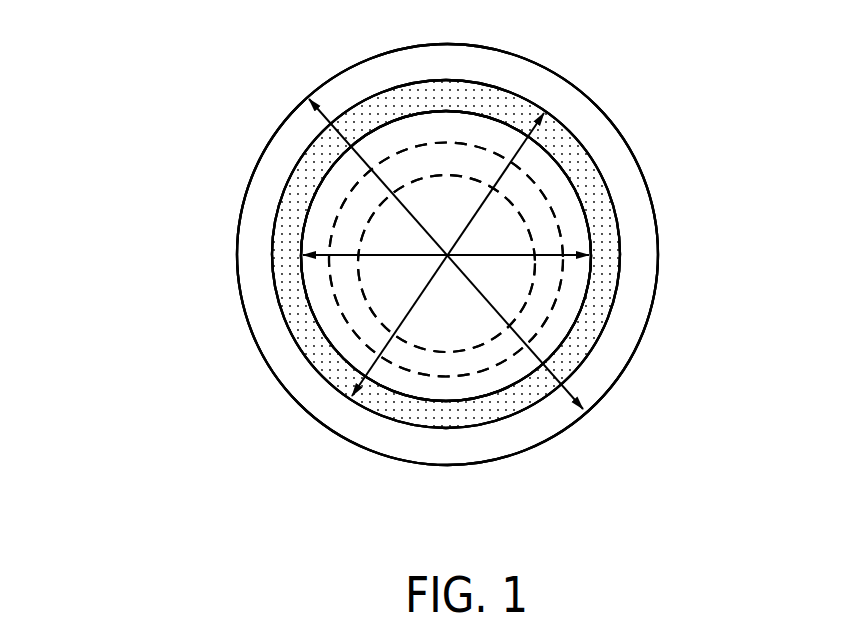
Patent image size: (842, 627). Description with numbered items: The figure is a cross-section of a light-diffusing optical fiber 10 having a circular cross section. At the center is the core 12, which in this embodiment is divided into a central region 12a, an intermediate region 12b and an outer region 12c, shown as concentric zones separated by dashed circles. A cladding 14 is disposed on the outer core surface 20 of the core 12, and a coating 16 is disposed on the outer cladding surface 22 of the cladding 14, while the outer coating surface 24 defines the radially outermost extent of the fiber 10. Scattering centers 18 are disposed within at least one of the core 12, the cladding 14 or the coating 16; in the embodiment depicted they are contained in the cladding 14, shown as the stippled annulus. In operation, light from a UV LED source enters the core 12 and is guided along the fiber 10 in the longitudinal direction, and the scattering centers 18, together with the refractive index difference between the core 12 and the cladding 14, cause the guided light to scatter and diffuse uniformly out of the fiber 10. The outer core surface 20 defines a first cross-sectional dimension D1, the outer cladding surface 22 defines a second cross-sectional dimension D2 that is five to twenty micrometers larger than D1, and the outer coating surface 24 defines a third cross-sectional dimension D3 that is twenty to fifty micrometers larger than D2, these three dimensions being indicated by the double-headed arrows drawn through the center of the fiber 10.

The light-diffusing optical fiber 10 is at (158, 87).
The core 12 is at (313, 188).
The central region 12a is at (393, 242).
The intermediate region 12b is at (547, 292).
The outer region 12c is at (548, 168).
The cladding 14 is at (288, 272).
The coating 16 is at (370, 80).
The scattering centers 18 is at (444, 411).
The outer core surface 20 is at (463, 110).
The outer cladding surface 22 is at (602, 340).
The outer coating surface 24 is at (603, 113).
The first cross-sectional dimension D1 is at (527, 255).
The second cross-sectional dimension D2 is at (405, 322).
The third cross-sectional dimension D3 is at (497, 362).